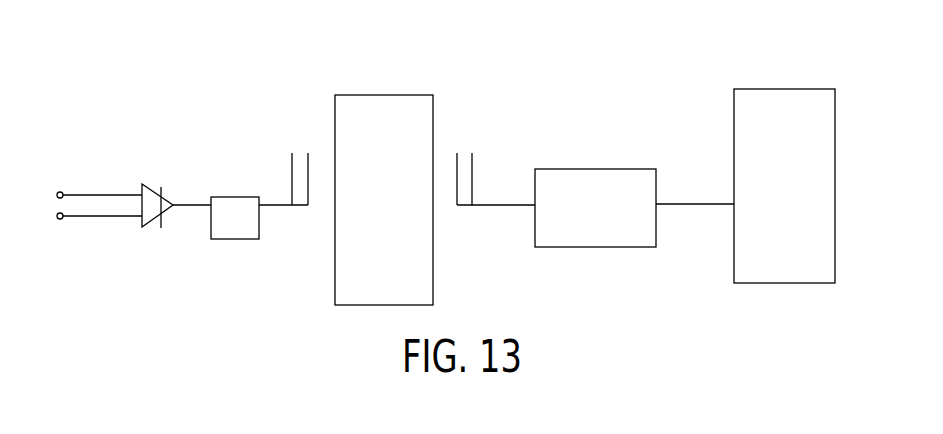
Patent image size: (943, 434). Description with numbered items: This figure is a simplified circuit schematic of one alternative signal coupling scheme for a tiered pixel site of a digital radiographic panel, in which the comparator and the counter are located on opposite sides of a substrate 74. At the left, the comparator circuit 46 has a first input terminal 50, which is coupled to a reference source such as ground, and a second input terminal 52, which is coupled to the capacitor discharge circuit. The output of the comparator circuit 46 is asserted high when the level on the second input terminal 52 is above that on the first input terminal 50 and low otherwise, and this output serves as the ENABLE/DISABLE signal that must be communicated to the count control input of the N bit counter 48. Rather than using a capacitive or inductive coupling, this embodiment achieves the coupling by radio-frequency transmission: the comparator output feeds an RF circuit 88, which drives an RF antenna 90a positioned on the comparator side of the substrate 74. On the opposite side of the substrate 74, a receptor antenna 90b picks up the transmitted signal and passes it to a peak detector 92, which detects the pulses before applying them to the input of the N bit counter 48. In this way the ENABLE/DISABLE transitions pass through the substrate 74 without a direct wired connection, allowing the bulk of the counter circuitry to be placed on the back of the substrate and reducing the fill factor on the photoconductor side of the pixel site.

The first input terminal 50 is at (60, 192).
The second input terminal 52 is at (59, 221).
The comparator circuit 46 is at (168, 200).
The RF circuit 88 is at (233, 197).
The RF antenna 90a is at (291, 165).
The substrate 74 is at (388, 95).
The receptor antenna 90b is at (472, 165).
The peak detector 92 is at (592, 169).
The N bit counter 48 is at (792, 89).